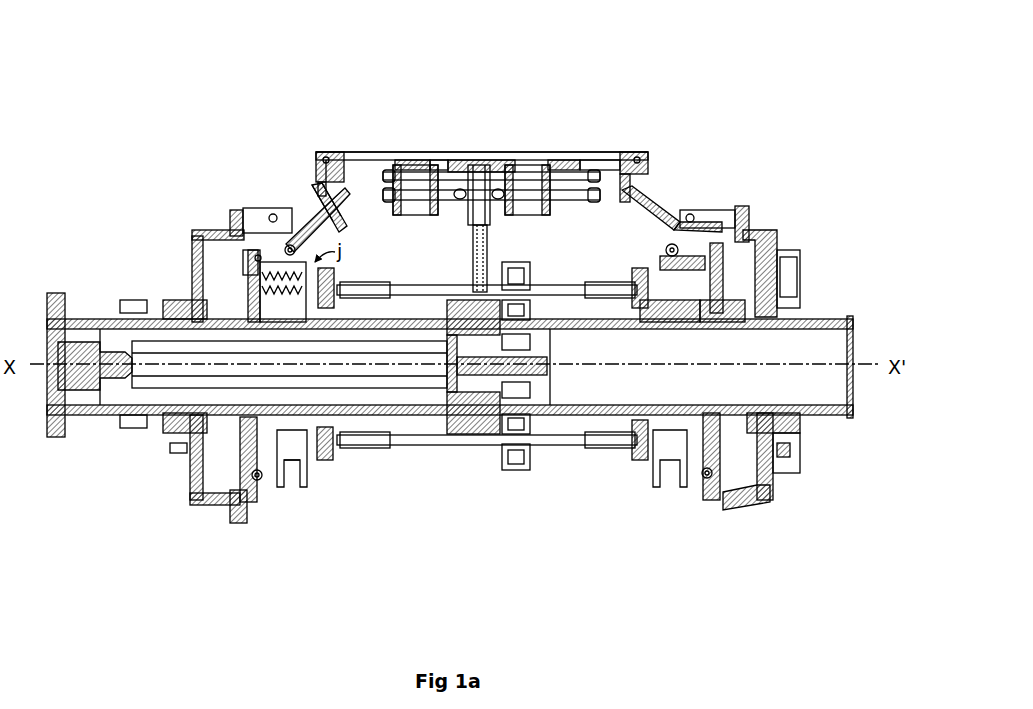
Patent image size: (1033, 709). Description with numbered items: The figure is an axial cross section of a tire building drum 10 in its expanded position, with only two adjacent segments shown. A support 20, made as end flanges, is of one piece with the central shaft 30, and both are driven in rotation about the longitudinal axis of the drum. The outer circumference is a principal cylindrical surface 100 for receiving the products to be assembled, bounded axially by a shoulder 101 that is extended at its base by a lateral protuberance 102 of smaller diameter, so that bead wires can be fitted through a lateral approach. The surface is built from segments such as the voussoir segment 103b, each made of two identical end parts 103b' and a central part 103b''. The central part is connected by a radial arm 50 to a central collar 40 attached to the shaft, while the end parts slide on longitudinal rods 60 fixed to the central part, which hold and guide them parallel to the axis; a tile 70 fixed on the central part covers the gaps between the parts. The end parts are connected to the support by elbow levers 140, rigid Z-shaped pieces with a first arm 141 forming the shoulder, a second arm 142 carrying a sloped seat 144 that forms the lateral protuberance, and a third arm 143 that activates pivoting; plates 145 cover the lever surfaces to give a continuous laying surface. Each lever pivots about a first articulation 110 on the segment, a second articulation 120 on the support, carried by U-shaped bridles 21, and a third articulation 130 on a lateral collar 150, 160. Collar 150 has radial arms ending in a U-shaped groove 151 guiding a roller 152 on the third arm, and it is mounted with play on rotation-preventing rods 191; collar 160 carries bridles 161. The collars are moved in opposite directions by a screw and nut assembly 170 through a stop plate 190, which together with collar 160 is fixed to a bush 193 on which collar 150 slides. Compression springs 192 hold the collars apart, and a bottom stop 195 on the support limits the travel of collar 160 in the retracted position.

The building drum 10 is at (690, 80).
The support 20 is at (196, 490).
The U-shaped bridle 21 is at (252, 218).
The central shaft 30 is at (103, 412).
The central collar 40 is at (473, 423).
The radial arm 50 is at (478, 253).
The longitudinal rod 60 is at (412, 200).
The tile 70 is at (438, 150).
The principal cylindrical surface 100 is at (525, 140).
The shoulder 101 is at (294, 150).
The lateral protuberance 102 is at (300, 193).
The voussoir segment 103b is at (358, 90).
The end part of voussoir segment 103b' is at (498, 107).
The central part of voussoir segment 103b'' is at (498, 112).
The first articulation 110 is at (640, 150).
The second articulation 120 is at (694, 216).
The third articulation 130 is at (685, 256).
The elbow lever 140 is at (665, 205).
The first arm 141 is at (652, 186).
The second arm 142 is at (700, 208).
The third arm 143 is at (678, 244).
The seat 144 is at (323, 200).
The plate 145 is at (312, 182).
The lateral collar 150 is at (663, 487).
The groove 151 is at (292, 478).
The roller 152 is at (712, 252).
The lateral collar 160 is at (262, 478).
The bridle 161 is at (251, 462).
The screw and nut assembly 170 is at (385, 470).
The stop plate 190 is at (325, 463).
The rotation-preventing rod 191 is at (210, 272).
The compression spring 192 is at (270, 290).
The bush 193 is at (274, 452).
The bottom stop 195 is at (207, 450).